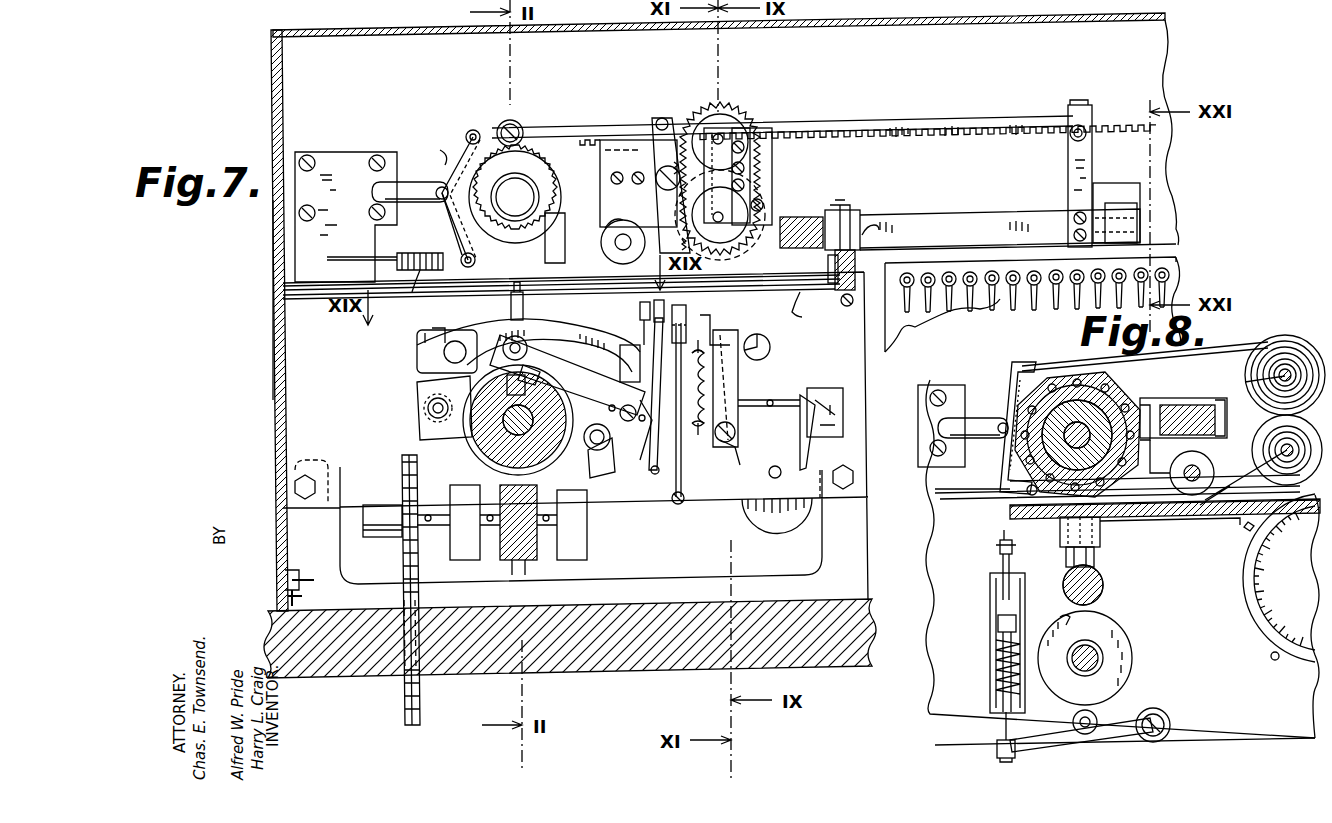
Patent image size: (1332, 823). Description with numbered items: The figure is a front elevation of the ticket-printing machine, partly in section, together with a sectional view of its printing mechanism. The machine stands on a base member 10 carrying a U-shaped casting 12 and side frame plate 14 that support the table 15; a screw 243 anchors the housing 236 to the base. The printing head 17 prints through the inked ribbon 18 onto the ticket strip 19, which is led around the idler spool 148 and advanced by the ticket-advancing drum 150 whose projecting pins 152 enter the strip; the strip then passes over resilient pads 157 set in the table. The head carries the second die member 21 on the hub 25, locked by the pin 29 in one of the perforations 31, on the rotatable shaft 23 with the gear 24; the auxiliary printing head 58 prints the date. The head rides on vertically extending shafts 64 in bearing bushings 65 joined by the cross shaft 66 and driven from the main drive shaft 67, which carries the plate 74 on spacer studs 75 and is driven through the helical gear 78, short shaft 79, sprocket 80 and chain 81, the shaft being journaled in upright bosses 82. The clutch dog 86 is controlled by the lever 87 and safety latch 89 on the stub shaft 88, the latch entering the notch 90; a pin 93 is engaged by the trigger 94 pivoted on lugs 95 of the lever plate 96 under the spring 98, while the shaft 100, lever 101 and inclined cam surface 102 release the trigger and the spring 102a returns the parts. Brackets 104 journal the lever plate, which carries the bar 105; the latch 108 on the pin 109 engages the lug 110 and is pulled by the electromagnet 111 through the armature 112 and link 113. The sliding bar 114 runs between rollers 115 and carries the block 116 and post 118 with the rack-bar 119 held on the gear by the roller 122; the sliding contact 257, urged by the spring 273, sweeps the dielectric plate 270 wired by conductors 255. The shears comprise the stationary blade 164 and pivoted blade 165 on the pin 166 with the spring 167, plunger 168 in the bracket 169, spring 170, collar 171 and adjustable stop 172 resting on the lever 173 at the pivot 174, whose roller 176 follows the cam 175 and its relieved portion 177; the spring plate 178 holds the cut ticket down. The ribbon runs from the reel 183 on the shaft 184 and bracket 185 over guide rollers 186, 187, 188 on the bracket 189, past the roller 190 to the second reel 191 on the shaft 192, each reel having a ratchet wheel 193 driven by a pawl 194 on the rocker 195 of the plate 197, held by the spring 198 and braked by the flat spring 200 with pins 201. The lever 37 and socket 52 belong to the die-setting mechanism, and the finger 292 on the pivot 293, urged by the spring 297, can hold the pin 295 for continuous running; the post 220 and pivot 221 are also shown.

In FIG. 7, the base member 10 is at (612, 660).
In FIG. 7, the U-shaped casting 12 is at (638, 585).
In FIG. 7, the side frame plate 14 is at (344, 388).
In FIG. 8, the table 15 is at (1233, 515).
In FIG. 8, the printing head 17 is at (1185, 388).
In FIG. 7, the inked ribbon 18 is at (580, 122).
In FIG. 8, the inked ribbon 18 is at (1215, 345).
In FIG. 8, the ticket strip 19 is at (945, 500).
In FIG. 8, the second die member 21 is at (1142, 444).
In FIG. 7, the rotatable shaft 23 is at (515, 197).
In FIG. 8, the rotatable shaft 23 is at (1135, 458).
In FIG. 7, the gear 24 is at (520, 182).
In FIG. 8, the hub 25 is at (1130, 420).
In FIG. 8, the pin 29 is at (1095, 418).
In FIG. 8, the perforations 31 is at (1074, 378).
In FIG. 7, the lever 37 is at (442, 156).
In FIG. 7, the socket 52 is at (410, 191).
In FIG. 8, the socket 52 is at (973, 428).
In FIG. 7, the auxiliary printing head 58 is at (606, 250).
In FIG. 8, the vertically extending shafts 64 is at (1094, 556).
In FIG. 8, the bearing bushings 65 is at (1098, 540).
In FIG. 8, the cross shaft 66 is at (1103, 580).
In FIG. 7, the main drive shaft 67 is at (500, 425).
In FIG. 8, the main drive shaft 67 is at (1095, 650).
In FIG. 7, the plate 74 is at (420, 422).
In FIG. 7, the spacer studs 75 is at (426, 406).
In FIG. 7, the helical gear 78 is at (505, 555).
In FIG. 7, the short shaft 79 is at (385, 498).
In FIG. 7, the sprocket 80 is at (402, 465).
In FIG. 7, the chain 81 is at (404, 705).
In FIG. 7, the upright bosses 82 is at (465, 486).
In FIG. 7, the clutch dog 86 is at (510, 380).
In FIG. 7, the lever 87 is at (617, 409).
In FIG. 7, the stub shaft 88 is at (618, 440).
In FIG. 7, the safety latch 89 is at (560, 390).
In FIG. 7, the notch 90 is at (529, 368).
In FIG. 7, the pin 93 is at (652, 450).
In FIG. 7, the trigger 94 is at (652, 448).
In FIG. 7, the lugs 95 is at (644, 328).
In FIG. 7, the lever plate 96 is at (828, 305).
In FIG. 7, the spring 98 is at (620, 360).
In FIG. 7, the shaft 100 is at (445, 356).
In FIG. 7, the lever 101 is at (488, 325).
In FIG. 7, the inclined cam surface 102 is at (616, 323).
In FIG. 7, the spring 102a is at (739, 452).
In FIG. 7, the brackets 104 is at (877, 233).
In FIG. 7, the longitudinally extending bar 105 is at (806, 316).
In FIG. 7, the latch 108 is at (738, 372).
In FIG. 7, the pin 109 is at (738, 438).
In FIG. 7, the lug 110 is at (740, 325).
In FIG. 7, the electromagnet 111 is at (843, 405).
In FIG. 7, the armature 112 is at (775, 420).
In FIG. 7, the link 113 is at (798, 398).
In FIG. 7, the sliding bar 114 is at (955, 215).
In FIG. 7, the rollers 115 is at (855, 215).
In FIG. 7, the block 116 is at (815, 215).
In FIG. 7, the post 118 is at (1070, 157).
In FIG. 7, the rack-bar 119 is at (972, 103).
In FIG. 7, the roller 122 is at (518, 125).
In FIG. 7, the idler spool 148 is at (765, 520).
In FIG. 8, the ticket-advancing drum 150 is at (1256, 588).
In FIG. 8, the projecting pins 152 is at (1272, 660).
In FIG. 8, the resilient pads 157 is at (1188, 520).
In FIG. 8, the stationary blade 164 is at (1010, 493).
In FIG. 8, the pivoted blade 165 is at (1000, 535).
In FIG. 7, the pin 166 is at (397, 265).
In FIG. 7, the spring 167 is at (426, 288).
In FIG. 8, the plunger 168 is at (1003, 562).
In FIG. 8, the bracket 169 is at (990, 600).
In FIG. 8, the spring 170 is at (996, 660).
In FIG. 8, the collar 171 is at (998, 636).
In FIG. 8, the adjustable stop 172 is at (1016, 755).
In FIG. 8, the lever 173 is at (1128, 712).
In FIG. 8, the pivot 174 is at (1170, 722).
In FIG. 8, the cam 175 is at (1132, 662).
In FIG. 8, the roller 176 is at (1073, 724).
In FIG. 8, the relieved portion 177 is at (1065, 612).
In FIG. 7, the spring plate 178 is at (325, 258).
In FIG. 7, the reel 183 is at (724, 104).
In FIG. 8, the reel 183 is at (1312, 342).
In FIG. 8, the shaft 184 is at (1250, 381).
In FIG. 7, the bracket 185 is at (773, 160).
In FIG. 8, the guide roller 186 is at (1014, 370).
In FIG. 8, the guide roller 187 is at (957, 426).
In FIG. 8, the guide roller 188 is at (1020, 488).
In FIG. 7, the bracket 189 is at (470, 232).
In FIG. 8, the roller 190 is at (1212, 468).
In FIG. 7, the second reel 191 is at (765, 260).
In FIG. 8, the second reel 191 is at (1287, 449).
In FIG. 8, the shaft 192 is at (1280, 445).
In FIG. 7, the ratchet wheel 193 is at (745, 115).
In FIG. 7, the pawl 194 is at (678, 120).
In FIG. 7, the rocker 195 is at (653, 206).
In FIG. 7, the plate 197 is at (625, 145).
In FIG. 7, the spring 198 is at (656, 184).
In FIG. 7, the flat spring 200 is at (748, 176).
In FIG. 7, the pins 201 is at (750, 112).
In FIG. 7, the post 220 is at (511, 300).
In FIG. 7, the pivot 221 is at (520, 350).
In FIG. 7, the housing 236 is at (273, 323).
In FIG. 7, the screw 243 is at (286, 582).
In FIG. 7, the conductors 255 is at (1070, 296).
In FIG. 7, the sliding contact 257 is at (1150, 245).
In FIG. 7, the dielectric plate 270 is at (927, 338).
In FIG. 7, the spring 273 is at (1107, 198).
In FIG. 7, the finger 292 is at (682, 480).
In FIG. 7, the pivot 293 is at (710, 321).
In FIG. 7, the pin 295 is at (705, 430).
In FIG. 7, the spring 297 is at (672, 504).